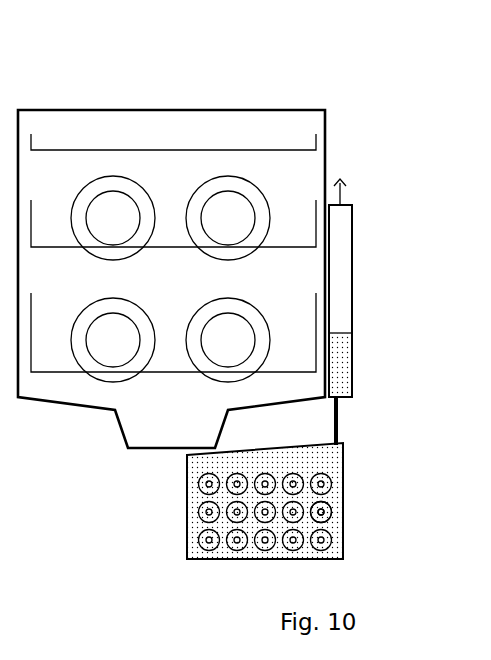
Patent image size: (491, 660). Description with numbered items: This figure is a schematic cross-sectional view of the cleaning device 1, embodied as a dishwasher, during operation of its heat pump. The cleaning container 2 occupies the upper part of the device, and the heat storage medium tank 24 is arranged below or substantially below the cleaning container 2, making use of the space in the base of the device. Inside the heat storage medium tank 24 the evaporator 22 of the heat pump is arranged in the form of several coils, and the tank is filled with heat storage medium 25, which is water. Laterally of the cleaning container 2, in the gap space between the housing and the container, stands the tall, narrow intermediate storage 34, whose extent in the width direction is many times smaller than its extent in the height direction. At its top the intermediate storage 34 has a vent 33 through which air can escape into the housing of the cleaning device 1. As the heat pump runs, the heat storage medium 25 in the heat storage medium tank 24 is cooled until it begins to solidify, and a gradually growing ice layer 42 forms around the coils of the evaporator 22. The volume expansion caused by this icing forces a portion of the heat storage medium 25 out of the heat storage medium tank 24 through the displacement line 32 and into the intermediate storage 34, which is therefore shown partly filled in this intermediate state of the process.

The cleaning device 1 is at (256, 70).
The cleaning container 2 is at (130, 110).
The evaporator 22 is at (209, 484).
The heat storage medium tank 24 is at (192, 533).
The heat storage medium 25 is at (342, 342).
The displacement line 32 is at (340, 422).
The vent 33 is at (345, 195).
The intermediate storage 34 is at (341, 238).
The ice layer 42 is at (323, 505).